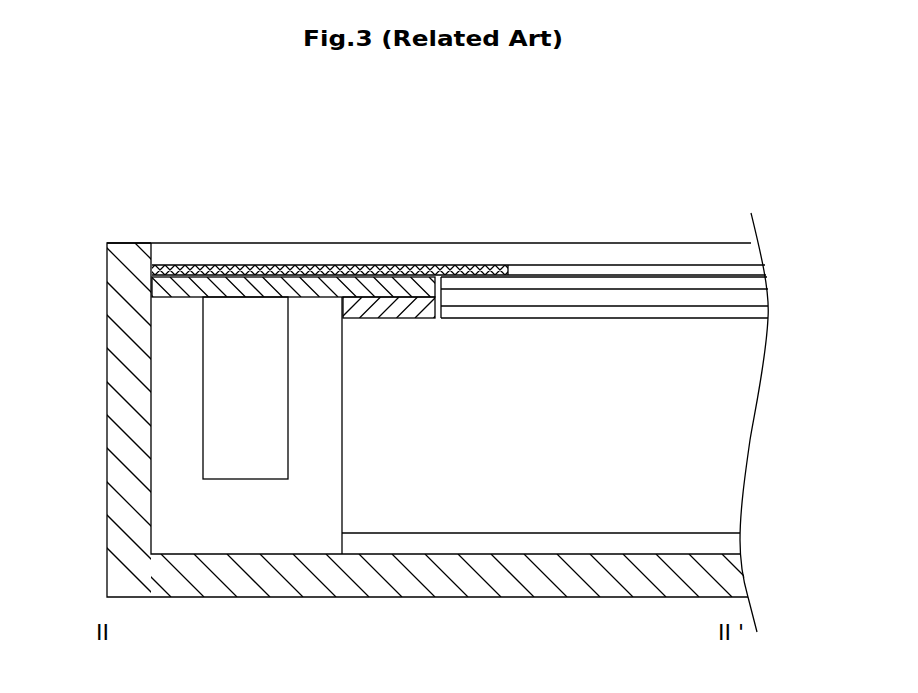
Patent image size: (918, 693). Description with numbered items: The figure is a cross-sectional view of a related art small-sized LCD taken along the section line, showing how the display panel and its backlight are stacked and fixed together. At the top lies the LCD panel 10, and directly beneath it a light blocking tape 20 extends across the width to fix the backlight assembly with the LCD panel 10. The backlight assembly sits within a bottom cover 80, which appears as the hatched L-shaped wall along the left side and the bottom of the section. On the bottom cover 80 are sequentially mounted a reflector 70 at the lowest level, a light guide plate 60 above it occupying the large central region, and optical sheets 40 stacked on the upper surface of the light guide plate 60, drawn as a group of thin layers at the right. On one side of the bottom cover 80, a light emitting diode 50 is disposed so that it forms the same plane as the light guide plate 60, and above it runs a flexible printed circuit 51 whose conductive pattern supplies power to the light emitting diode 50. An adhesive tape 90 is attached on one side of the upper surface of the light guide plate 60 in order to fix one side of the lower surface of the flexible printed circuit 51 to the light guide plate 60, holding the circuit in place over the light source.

The LCD panel 10 is at (392, 253).
The light blocking tape 20 is at (483, 272).
The optical sheets 40 is at (778, 278).
The light emitting diodes 50 is at (215, 363).
The flexible printed circuit 51 is at (228, 268).
The light guide plate 60 is at (730, 440).
The reflector 70 is at (730, 544).
The bottom cover 80 is at (123, 452).
The adhesive tapes 90 is at (343, 304).